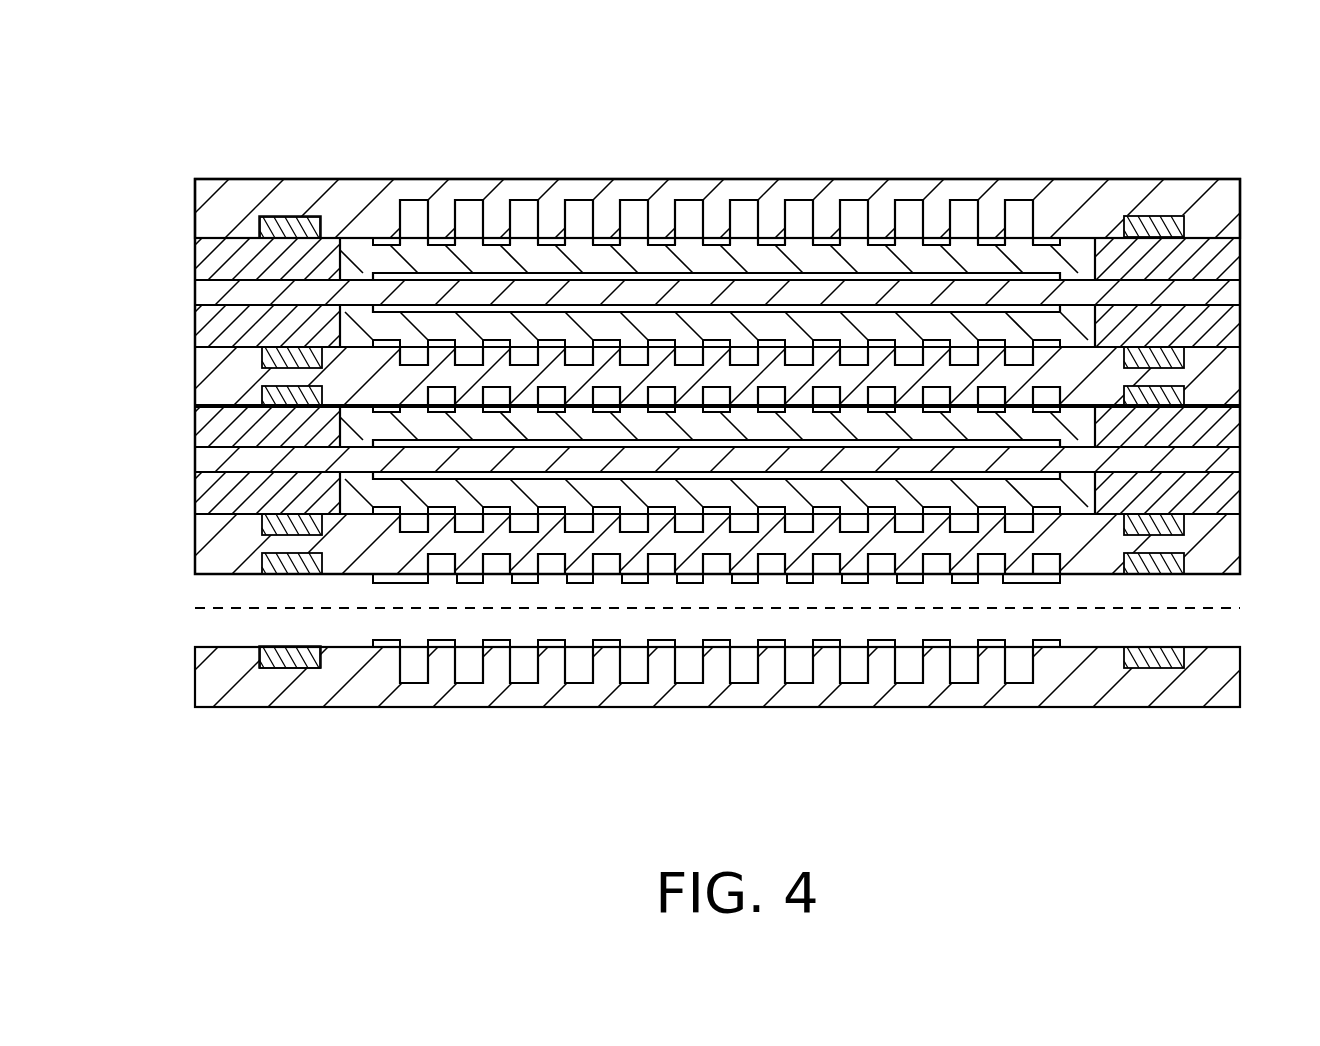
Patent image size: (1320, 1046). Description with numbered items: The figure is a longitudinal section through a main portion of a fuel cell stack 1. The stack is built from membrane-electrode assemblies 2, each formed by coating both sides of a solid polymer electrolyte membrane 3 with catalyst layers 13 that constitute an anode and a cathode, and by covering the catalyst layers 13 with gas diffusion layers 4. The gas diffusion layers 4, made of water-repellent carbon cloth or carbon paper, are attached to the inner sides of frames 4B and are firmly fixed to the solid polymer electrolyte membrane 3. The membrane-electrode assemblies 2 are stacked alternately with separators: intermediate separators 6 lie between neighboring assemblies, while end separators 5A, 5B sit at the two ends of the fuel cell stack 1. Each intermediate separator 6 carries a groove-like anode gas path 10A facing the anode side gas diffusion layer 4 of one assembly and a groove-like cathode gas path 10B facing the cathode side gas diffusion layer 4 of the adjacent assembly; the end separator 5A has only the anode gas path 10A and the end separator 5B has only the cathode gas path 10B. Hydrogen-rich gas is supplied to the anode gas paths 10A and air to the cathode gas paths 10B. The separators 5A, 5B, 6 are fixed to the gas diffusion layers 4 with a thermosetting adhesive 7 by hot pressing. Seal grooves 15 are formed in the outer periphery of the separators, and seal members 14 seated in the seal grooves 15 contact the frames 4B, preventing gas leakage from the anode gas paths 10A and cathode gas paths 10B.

The fuel cell stack 1 is at (1240, 165).
The membrane-electrode assembly 2 is at (190, 240).
The solid polymer electrolyte membrane 3 is at (712, 293).
The gas diffusion layer 4 is at (662, 330).
The frame 4B is at (1208, 325).
The end separator 5A is at (220, 228).
The end separator 5B is at (218, 680).
The intermediate separator 6 is at (222, 538).
The adhesive 7 is at (878, 641).
The anode gas path 10A is at (605, 577).
The cathode gas path 10B is at (692, 667).
The catalyst layer 13 is at (503, 273).
The seal member 14 is at (282, 670).
The seal groove 15 is at (316, 670).